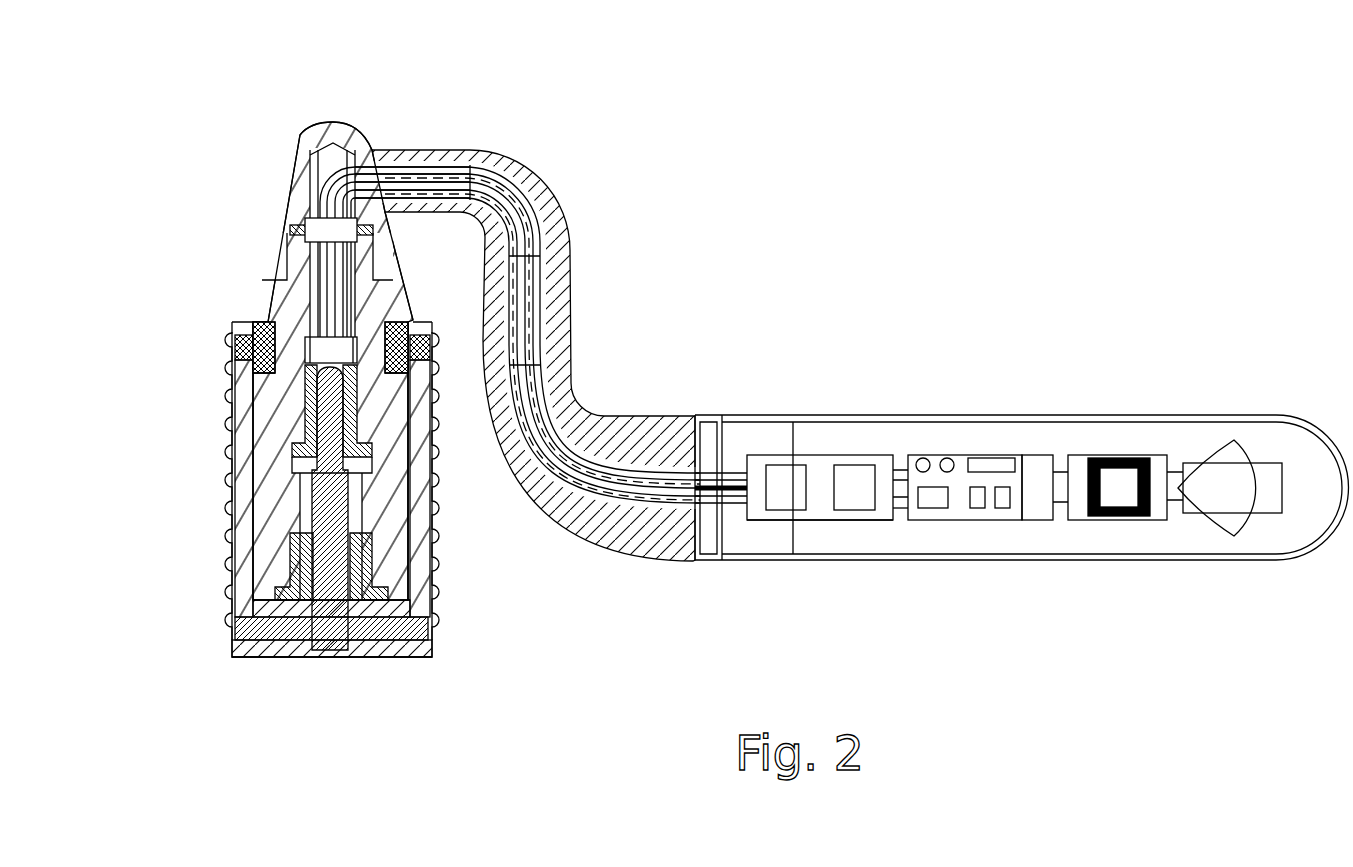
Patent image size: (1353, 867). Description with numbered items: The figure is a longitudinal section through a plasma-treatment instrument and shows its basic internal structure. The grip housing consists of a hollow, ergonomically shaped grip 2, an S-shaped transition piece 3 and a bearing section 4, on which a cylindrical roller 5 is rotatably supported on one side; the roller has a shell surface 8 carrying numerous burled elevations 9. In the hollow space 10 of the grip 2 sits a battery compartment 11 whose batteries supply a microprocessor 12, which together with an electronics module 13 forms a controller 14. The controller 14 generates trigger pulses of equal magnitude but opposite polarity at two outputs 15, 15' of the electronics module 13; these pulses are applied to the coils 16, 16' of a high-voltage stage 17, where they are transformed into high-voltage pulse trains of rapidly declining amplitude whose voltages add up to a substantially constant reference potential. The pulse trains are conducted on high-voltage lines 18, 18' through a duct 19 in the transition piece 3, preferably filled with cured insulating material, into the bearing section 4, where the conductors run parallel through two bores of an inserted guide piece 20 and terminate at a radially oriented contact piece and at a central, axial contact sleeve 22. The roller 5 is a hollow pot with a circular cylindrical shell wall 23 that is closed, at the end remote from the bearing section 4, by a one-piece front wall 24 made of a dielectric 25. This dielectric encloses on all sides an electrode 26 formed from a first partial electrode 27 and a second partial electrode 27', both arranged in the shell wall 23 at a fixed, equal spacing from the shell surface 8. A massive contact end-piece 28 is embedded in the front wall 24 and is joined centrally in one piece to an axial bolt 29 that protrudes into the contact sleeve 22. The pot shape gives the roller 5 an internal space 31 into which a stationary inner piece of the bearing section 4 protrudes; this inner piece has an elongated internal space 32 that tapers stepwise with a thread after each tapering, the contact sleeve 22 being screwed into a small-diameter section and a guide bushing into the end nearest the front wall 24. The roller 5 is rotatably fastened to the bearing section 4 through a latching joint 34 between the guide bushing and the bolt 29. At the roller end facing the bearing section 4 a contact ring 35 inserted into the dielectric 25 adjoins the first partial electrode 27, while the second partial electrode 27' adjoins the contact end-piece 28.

The grip 2 is at (973, 414).
The transition piece 3 is at (596, 383).
The bearing section 4 is at (282, 182).
The cylindrical roller 5 is at (460, 564).
The shell surface 8 is at (440, 600).
The elevations 9 is at (440, 622).
The hollow space 10 is at (1147, 437).
The battery compartment 11 is at (1222, 463).
The microprocessor 12 is at (1080, 455).
The electronics module 13 is at (992, 452).
The controller 14 is at (1045, 433).
The output 15 is at (957, 425).
The output 15' is at (944, 588).
The coil 16 is at (880, 420).
The coil 16' is at (820, 425).
The high-voltage stage 17 is at (818, 522).
The high-voltage line 18 is at (697, 417).
The high-voltage line 18' is at (680, 566).
The duct 19 is at (540, 320).
The guide piece 20 is at (318, 224).
The contact sleeve 22 is at (305, 372).
The shell wall 23 is at (400, 487).
The front wall 24 is at (322, 655).
The dielectric 25 is at (293, 449).
The electrode 26 is at (218, 448).
The first partial electrode 27 is at (455, 486).
The second partial electrode 27' is at (393, 675).
The contact end-piece 28 is at (387, 617).
The axial bolt 29 is at (302, 425).
The internal space 31 is at (396, 509).
The internal space 32 is at (300, 472).
The latching joint 34 is at (292, 577).
The contact ring 35 is at (400, 337).